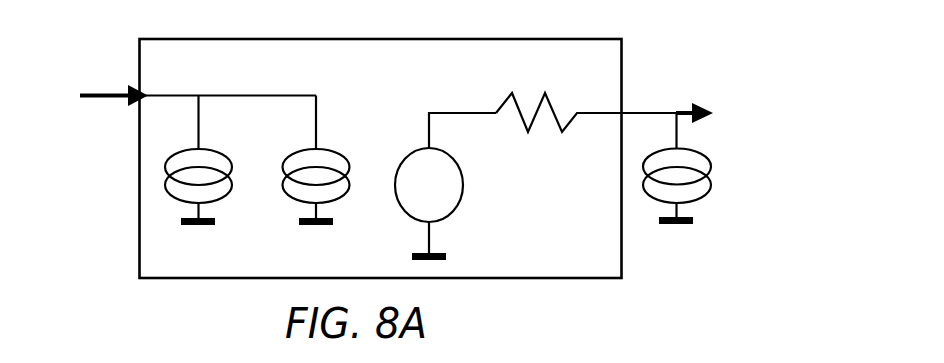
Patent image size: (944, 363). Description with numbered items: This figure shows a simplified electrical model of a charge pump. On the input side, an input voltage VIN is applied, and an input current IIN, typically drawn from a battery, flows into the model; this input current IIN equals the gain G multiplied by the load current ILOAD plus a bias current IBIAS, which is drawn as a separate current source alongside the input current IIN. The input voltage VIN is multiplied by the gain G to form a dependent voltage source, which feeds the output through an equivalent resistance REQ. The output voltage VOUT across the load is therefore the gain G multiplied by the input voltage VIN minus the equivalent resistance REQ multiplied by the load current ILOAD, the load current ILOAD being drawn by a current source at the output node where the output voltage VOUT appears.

The input voltage VIN is at (174, 95).
The input current IIN is at (210, 161).
The bias current IBIAS is at (338, 161).
The equivalent resistance REQ is at (586, 97).
The output voltage VOUT is at (732, 114).
The load current ILOAD is at (716, 168).